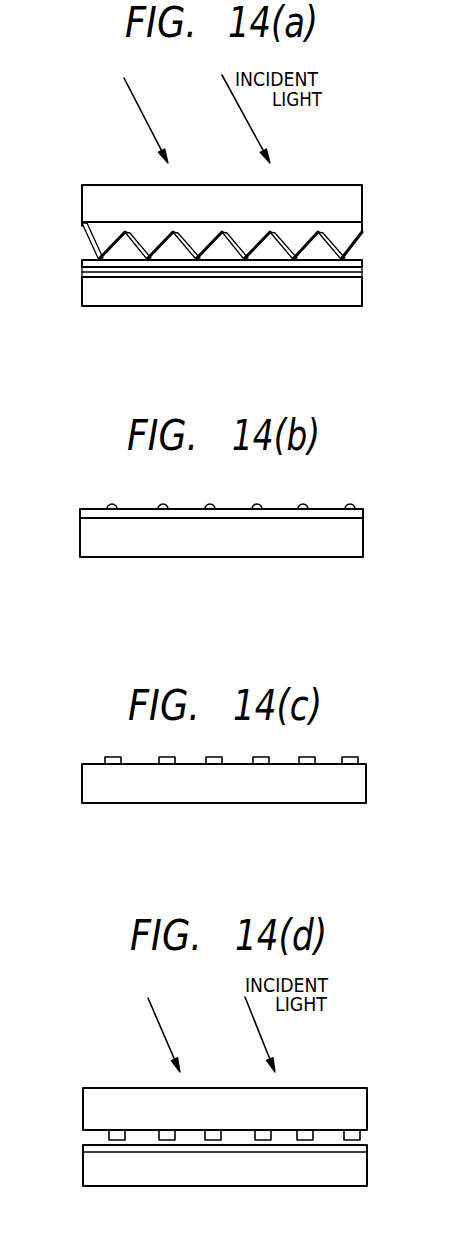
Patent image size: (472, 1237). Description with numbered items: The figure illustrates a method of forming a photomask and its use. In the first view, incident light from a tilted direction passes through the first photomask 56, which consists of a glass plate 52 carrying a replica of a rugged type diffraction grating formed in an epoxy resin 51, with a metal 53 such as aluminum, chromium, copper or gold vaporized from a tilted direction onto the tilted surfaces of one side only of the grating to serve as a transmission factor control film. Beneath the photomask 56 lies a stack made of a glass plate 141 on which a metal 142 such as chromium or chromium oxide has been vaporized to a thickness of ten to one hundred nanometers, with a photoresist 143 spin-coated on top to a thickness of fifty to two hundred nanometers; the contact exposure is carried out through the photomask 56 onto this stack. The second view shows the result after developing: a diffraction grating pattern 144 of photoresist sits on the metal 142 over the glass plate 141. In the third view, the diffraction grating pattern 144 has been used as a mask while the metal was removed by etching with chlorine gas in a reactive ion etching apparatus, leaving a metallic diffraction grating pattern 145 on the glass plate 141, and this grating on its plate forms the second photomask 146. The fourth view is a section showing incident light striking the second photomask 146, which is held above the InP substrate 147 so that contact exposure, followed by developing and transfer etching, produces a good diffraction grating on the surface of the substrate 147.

In FIG. 14A, the photomask 56 is at (78, 185).
In FIG. 14A, the glass plate 52 is at (357, 203).
In FIG. 14A, the epoxy resin 51 is at (354, 232).
In FIG. 14A, the metal 53 is at (345, 247).
In FIG. 14A, the photoresist 143 is at (363, 262).
In FIG. 14A, the metal 142 is at (356, 297).
In FIG. 14B, the metal 142 is at (358, 515).
In FIG. 14A, the glass plate 141 is at (363, 301).
In FIG. 14B, the glass plate 141 is at (358, 552).
In FIG. 14C, the glass plate 141 is at (357, 788).
In FIG. 14B, the diffraction grating pattern 144 is at (351, 507).
In FIG. 14C, the metallic diffraction grating pattern 145 is at (356, 756).
In FIG. 14C, the second photomask 146 is at (78, 757).
In FIG. 14D, the second photomask 146 is at (78, 1088).
In FIG. 14D, the InP substrate 147 is at (78, 1145).